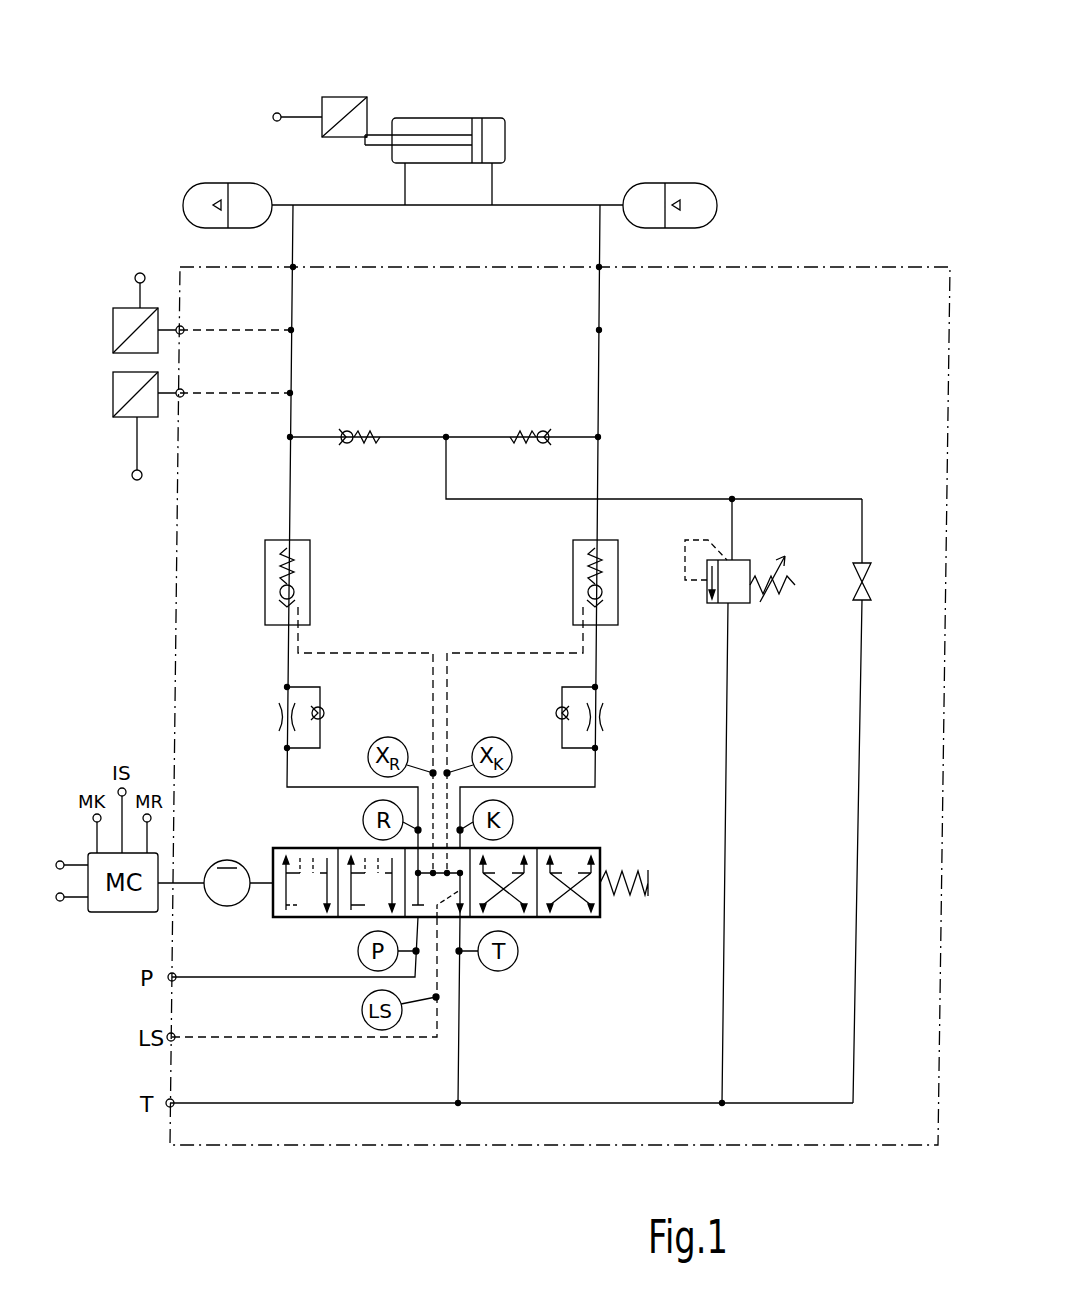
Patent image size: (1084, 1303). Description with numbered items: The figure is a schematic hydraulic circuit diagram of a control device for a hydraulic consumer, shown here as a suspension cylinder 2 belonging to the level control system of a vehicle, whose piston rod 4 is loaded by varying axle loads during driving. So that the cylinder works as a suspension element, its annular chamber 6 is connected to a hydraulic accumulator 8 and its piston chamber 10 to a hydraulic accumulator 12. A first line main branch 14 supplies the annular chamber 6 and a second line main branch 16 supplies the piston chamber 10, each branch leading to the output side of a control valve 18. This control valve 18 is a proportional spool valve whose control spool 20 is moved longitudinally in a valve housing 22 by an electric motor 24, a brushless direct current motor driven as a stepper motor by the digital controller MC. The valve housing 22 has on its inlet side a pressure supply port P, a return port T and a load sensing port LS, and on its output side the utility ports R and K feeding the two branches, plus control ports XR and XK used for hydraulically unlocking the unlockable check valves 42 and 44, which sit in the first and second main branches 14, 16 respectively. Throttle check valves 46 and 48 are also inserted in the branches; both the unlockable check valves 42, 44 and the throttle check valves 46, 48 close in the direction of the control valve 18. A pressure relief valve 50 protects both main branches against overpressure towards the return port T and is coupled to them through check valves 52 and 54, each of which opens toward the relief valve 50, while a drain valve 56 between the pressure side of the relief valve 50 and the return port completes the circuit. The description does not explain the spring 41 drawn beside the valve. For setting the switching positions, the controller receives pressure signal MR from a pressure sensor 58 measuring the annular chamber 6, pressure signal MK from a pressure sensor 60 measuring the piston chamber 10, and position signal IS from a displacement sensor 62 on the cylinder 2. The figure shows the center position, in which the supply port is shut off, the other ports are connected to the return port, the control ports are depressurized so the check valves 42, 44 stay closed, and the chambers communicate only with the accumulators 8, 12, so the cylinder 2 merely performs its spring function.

The suspension cylinder 2 is at (447, 118).
The piston rod 4 is at (423, 135).
The annular chamber 6 is at (430, 152).
The hydraulic accumulator 8 is at (183, 198).
The piston chamber 10 is at (497, 140).
The hydraulic accumulator 12 is at (685, 183).
The first line main branch 14 is at (290, 477).
The second line main branch 16 is at (598, 465).
The control valve 18 is at (548, 839).
The control spool 20 is at (315, 882).
The valve housing 22 is at (580, 848).
The electric motor 24 is at (216, 861).
The return spring 41 is at (625, 885).
The unlockable check valve 42 is at (310, 578).
The unlockable check valve 44 is at (573, 578).
The throttle check valve 46 is at (320, 703).
The throttle check valve 48 is at (562, 703).
The pressure relief valve 50 is at (738, 588).
The check valve 52 is at (348, 428).
The check valve 54 is at (541, 430).
The drain valve 56 is at (870, 583).
The pressure sensor 58 is at (113, 395).
The pressure sensor 60 is at (113, 330).
The displacement sensor 62 is at (345, 95).